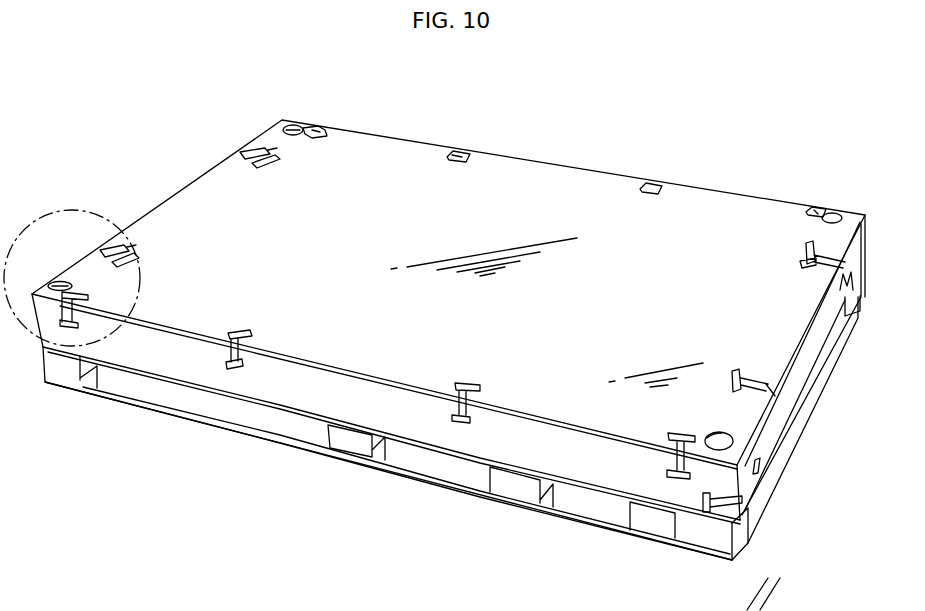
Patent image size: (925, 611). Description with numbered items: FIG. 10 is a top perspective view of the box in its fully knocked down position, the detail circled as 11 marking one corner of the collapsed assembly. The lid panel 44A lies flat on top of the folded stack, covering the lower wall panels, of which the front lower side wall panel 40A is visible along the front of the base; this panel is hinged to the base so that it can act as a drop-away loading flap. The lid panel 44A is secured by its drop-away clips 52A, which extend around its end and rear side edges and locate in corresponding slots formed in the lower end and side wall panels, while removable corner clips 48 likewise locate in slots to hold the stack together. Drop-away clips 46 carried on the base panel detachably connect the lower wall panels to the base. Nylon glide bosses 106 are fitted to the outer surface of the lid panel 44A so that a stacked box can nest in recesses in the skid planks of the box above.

The pallet and lid assembly (detail area) 11 is at (60, 255).
The front lower side wall panel 40A is at (380, 413).
The lid panel 44A is at (482, 320).
The drop-away clips 46 is at (253, 342).
The corner clips 48 is at (483, 394).
The drop-away clips 52A is at (270, 161).
The nylon glide bosses 106 is at (710, 434).